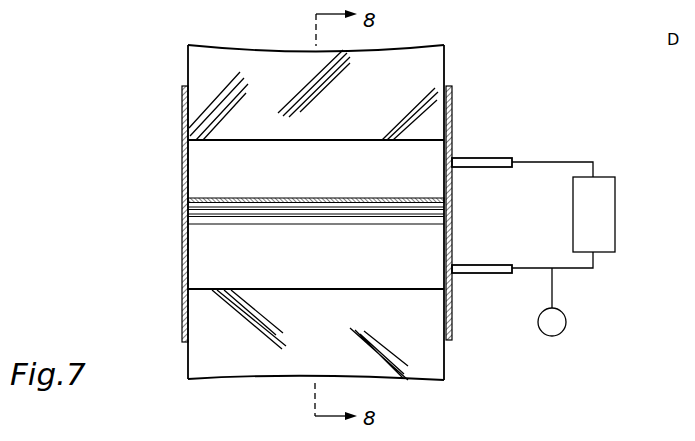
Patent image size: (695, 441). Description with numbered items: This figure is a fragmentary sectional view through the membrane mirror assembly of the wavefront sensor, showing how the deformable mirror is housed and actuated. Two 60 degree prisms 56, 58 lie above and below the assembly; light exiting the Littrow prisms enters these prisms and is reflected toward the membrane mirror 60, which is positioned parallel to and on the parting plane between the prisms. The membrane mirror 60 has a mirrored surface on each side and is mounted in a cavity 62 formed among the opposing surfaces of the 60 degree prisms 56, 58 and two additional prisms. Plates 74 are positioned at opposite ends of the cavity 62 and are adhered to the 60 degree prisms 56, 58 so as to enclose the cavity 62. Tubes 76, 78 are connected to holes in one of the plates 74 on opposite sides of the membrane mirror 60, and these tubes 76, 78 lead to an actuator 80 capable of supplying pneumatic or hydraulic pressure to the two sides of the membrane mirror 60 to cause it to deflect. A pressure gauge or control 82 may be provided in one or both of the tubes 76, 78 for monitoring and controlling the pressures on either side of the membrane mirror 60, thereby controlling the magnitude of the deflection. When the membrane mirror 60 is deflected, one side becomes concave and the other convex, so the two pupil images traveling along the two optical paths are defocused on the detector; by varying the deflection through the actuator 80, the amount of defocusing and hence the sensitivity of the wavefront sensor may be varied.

The 60 degree prism 56 is at (413, 368).
The 60 degree prism 58 is at (408, 50).
The membrane mirror 60 is at (228, 196).
The cavity 62 is at (202, 150).
The plates 74 is at (183, 297).
The tube 76 is at (490, 157).
The tube 78 is at (481, 264).
The actuator 80 is at (605, 190).
The pressure gauge or control 82 is at (556, 335).